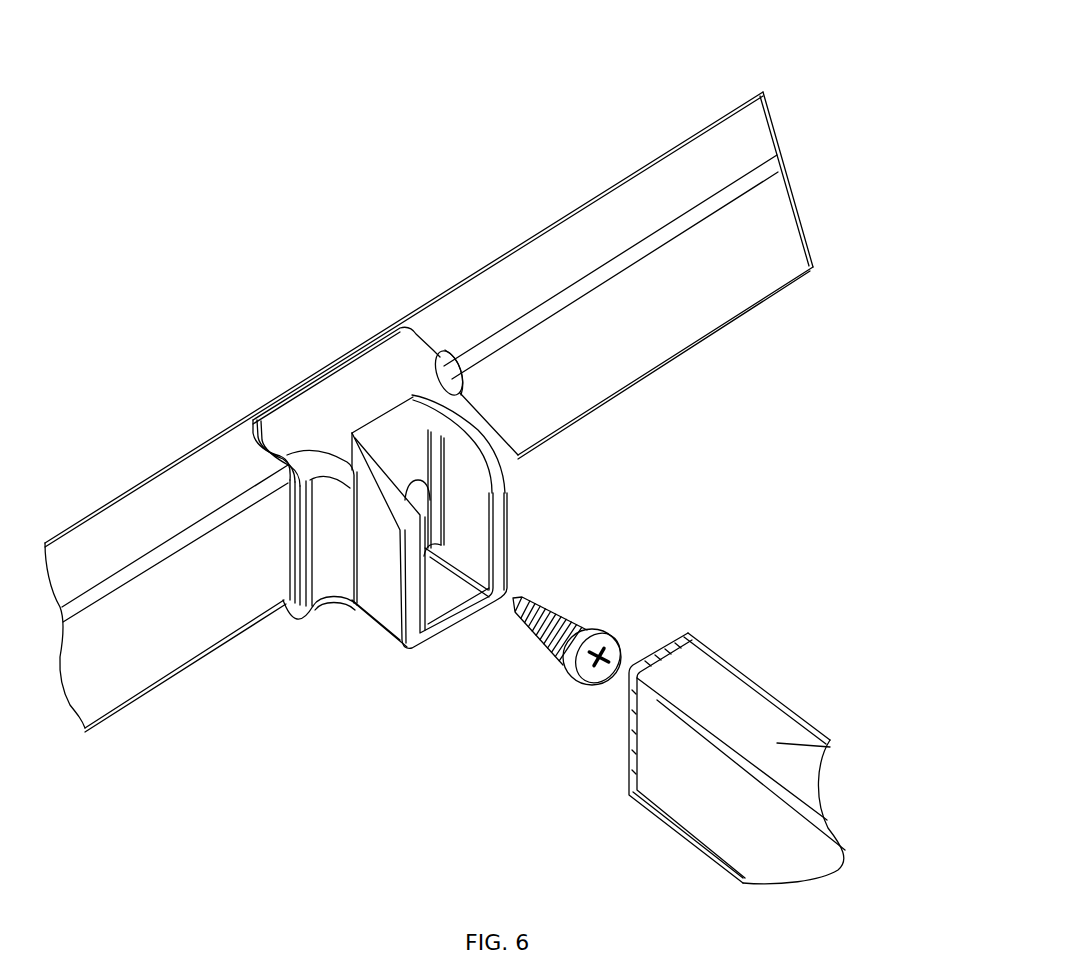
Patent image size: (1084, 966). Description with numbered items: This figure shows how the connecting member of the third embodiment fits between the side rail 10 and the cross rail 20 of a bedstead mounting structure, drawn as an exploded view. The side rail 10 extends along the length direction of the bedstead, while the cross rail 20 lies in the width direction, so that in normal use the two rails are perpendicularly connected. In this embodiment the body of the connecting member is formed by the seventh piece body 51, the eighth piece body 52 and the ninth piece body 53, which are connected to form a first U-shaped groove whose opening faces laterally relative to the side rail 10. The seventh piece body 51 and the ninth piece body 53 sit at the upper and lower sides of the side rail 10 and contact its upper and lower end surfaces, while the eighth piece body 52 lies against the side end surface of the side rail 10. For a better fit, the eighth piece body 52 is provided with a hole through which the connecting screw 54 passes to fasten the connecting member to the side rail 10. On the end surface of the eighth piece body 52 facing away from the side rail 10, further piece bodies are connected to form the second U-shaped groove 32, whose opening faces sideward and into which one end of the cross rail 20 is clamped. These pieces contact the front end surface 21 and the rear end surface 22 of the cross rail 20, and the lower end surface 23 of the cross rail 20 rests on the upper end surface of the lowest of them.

The side rail 10 is at (697, 165).
The cross rail 20 is at (771, 737).
The front end surface 21 is at (680, 773).
The rear end surface 22 is at (787, 700).
The lower end surface 23 is at (673, 677).
The second U-shaped groove 32 is at (463, 510).
The seventh piece body 51 is at (397, 357).
The eighth piece body 52 is at (328, 535).
The ninth piece body 53 is at (283, 605).
The connecting screw 54 is at (593, 627).